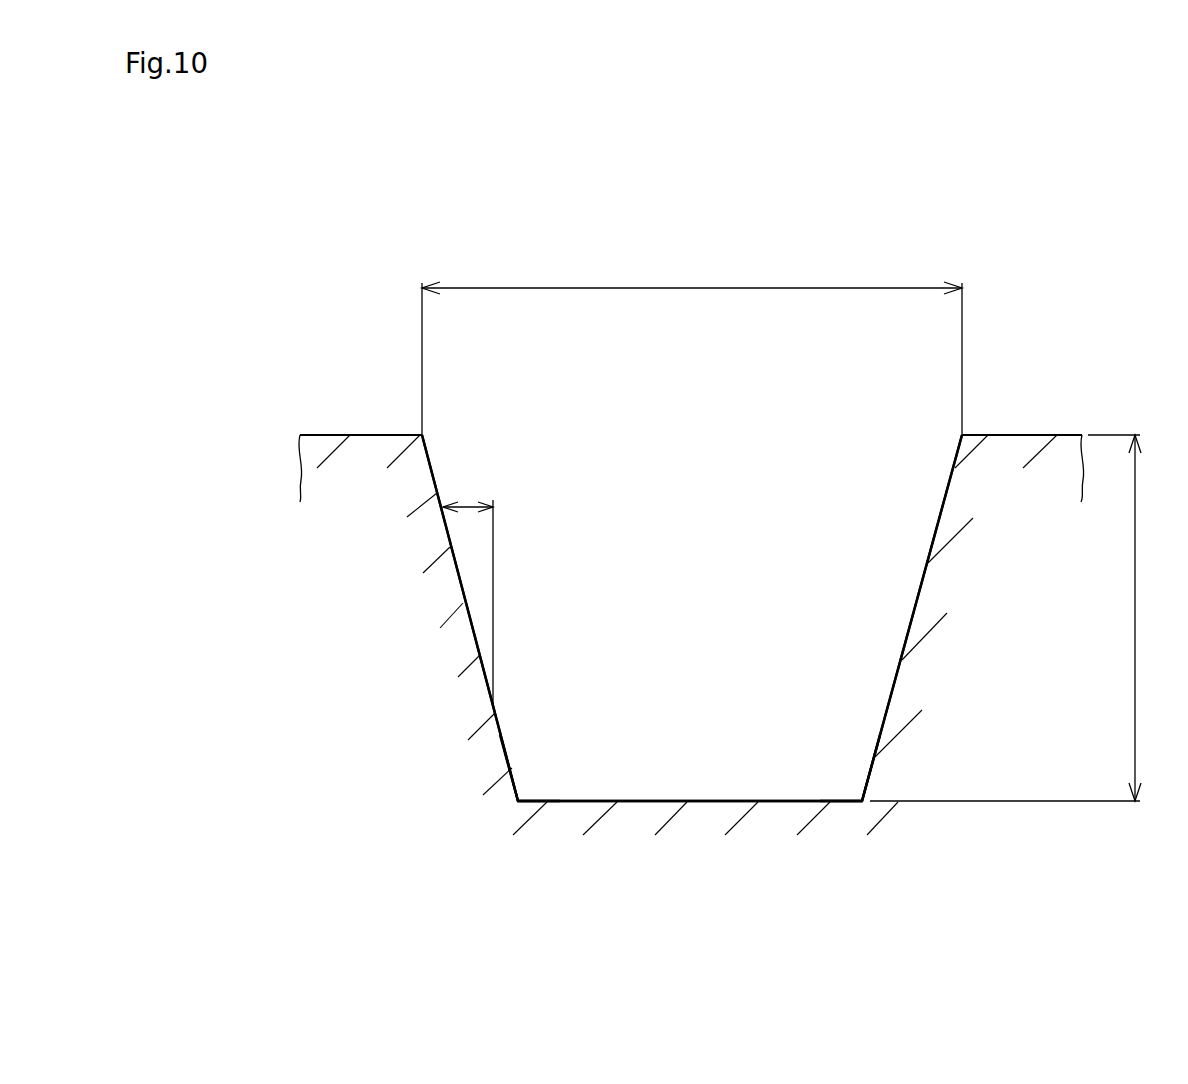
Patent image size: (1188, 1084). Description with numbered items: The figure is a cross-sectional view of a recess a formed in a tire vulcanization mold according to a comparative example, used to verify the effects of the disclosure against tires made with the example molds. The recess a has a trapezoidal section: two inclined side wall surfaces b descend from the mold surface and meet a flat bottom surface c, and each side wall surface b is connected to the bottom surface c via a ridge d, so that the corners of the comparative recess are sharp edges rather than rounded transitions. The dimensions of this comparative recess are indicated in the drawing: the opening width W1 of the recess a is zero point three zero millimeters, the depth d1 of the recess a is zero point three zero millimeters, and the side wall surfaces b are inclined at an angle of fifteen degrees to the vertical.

The recess a is at (686, 500).
The side wall surface b is at (458, 598).
The bottom surface c is at (668, 802).
The ridge d is at (520, 802).
The opening width of recess W1 is at (692, 346).
The depth of recess d1 is at (1023, 618).